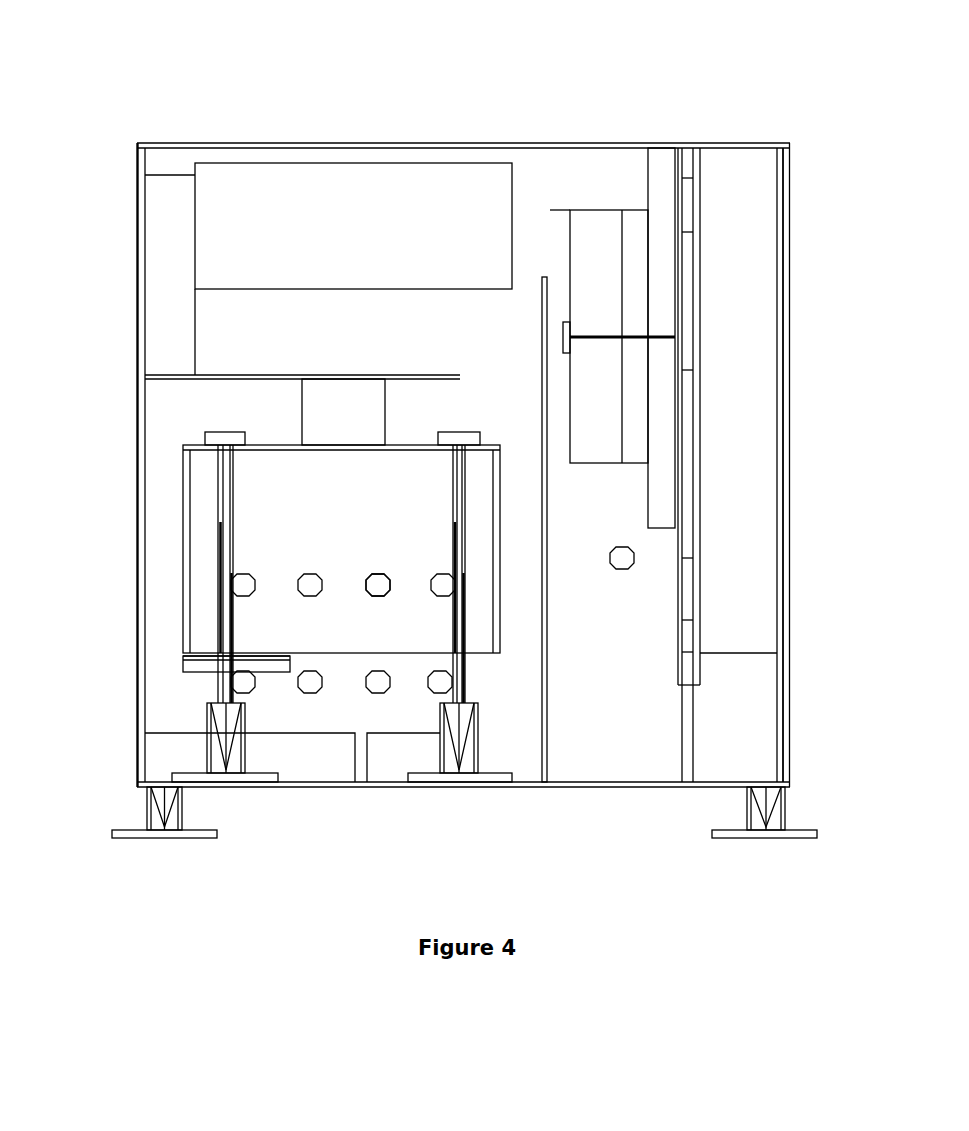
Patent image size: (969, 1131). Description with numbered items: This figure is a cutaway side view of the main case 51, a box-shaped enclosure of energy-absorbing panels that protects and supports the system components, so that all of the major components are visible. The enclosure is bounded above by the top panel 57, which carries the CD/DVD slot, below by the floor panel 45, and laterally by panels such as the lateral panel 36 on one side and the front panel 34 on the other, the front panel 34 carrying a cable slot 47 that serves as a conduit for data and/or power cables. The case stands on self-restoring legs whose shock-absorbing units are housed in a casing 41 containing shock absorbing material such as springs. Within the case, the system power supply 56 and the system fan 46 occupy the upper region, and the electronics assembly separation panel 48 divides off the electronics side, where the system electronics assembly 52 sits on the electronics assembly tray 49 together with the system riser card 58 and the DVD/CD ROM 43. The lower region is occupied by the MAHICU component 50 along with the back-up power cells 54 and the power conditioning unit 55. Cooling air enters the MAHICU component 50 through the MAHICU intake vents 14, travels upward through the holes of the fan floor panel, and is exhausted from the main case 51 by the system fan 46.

The MAHICU intake vents 14 is at (380, 555).
The front panel 34 is at (792, 445).
The lateral panel 36 is at (142, 458).
The casing 41 is at (147, 810).
The DVD/CD ROM 43 is at (743, 175).
The floor panel 45 is at (593, 783).
The system fan 46 is at (163, 240).
The cable slot 47 is at (150, 368).
The electronics assembly separation panel 48 is at (541, 345).
The electronics assembly tray 49 is at (679, 258).
The MAHICU component 50 is at (340, 504).
The main case 51 is at (368, 77).
The system electronics assembly 52 is at (670, 165).
The back-up power cells 54 is at (265, 743).
The power conditioning unit 55 is at (383, 755).
The system power supply 56 is at (384, 232).
The top panel 57 is at (582, 143).
The system riser card 58 is at (613, 237).